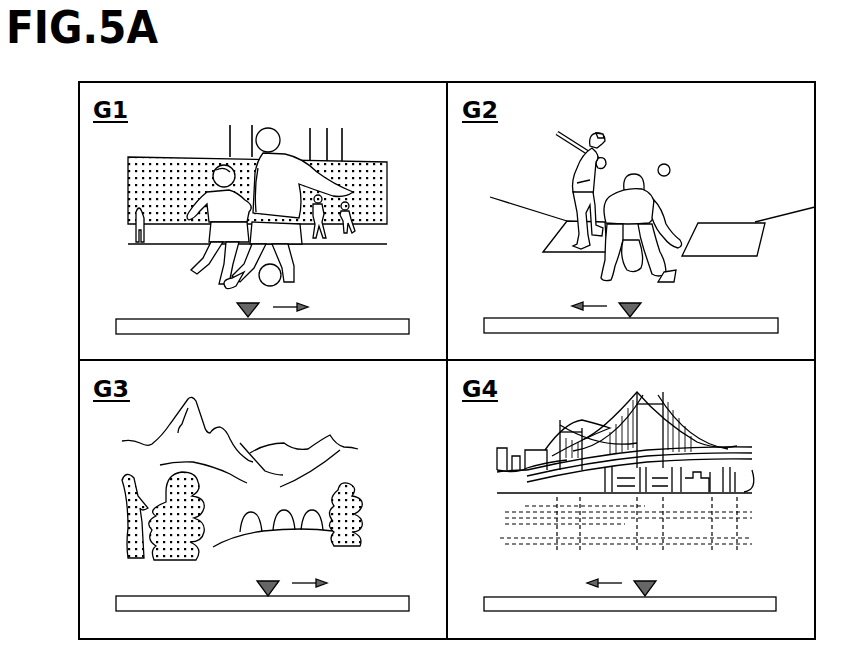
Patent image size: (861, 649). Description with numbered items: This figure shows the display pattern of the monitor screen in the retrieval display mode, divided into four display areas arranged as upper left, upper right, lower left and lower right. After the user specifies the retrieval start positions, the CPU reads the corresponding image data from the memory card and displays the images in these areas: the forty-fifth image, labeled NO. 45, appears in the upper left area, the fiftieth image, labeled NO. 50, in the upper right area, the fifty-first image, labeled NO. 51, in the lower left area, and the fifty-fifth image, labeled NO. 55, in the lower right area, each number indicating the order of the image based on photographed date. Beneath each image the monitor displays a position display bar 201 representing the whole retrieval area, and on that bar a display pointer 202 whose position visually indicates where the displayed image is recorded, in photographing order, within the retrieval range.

The position display bar 201 is at (125, 327).
The display pointer 202 is at (237, 307).
The image No. 45 is at (280, 193).
The image No. 50 is at (652, 190).
The image No. 51 is at (273, 468).
The image No. 55 is at (648, 464).